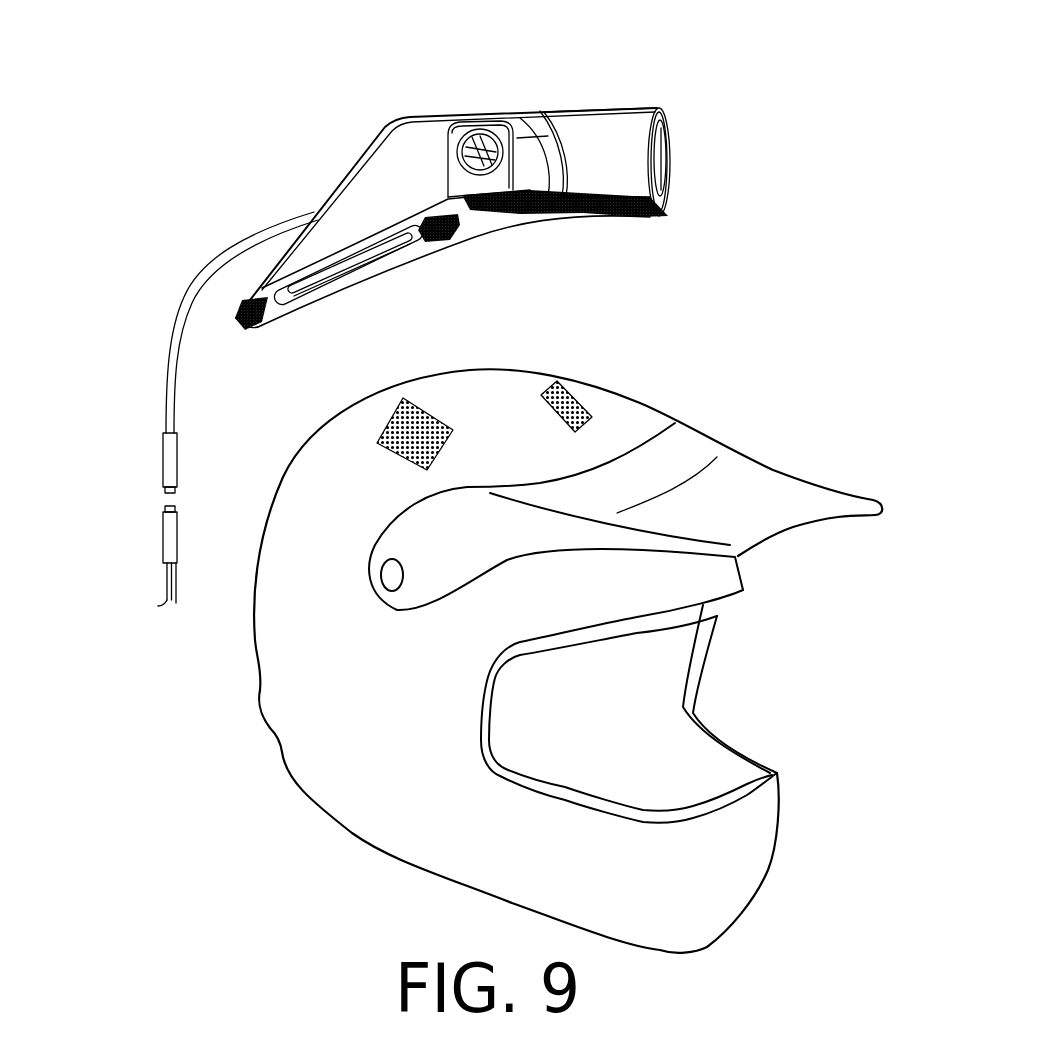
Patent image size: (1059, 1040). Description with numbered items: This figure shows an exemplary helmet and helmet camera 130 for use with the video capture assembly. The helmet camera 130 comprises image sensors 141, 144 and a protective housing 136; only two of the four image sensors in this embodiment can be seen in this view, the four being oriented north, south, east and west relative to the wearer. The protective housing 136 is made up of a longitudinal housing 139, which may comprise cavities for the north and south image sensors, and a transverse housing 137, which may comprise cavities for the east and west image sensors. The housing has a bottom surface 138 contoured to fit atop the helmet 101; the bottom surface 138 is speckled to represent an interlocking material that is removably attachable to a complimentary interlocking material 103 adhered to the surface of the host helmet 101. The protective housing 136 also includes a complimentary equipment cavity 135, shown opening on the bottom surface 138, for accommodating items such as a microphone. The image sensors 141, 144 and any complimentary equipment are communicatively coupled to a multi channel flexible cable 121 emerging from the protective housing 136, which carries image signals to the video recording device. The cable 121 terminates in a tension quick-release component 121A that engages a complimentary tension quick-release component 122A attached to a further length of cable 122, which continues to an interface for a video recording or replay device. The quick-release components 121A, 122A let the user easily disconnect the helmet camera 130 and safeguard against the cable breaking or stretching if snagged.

The helmet 101 is at (337, 457).
The complimentary interlocking material 103 is at (417, 420).
The multi channel flexible cable 121 is at (180, 315).
The tension quick-release component 121A is at (167, 447).
The cable 122 is at (168, 575).
The complimentary tension quick-release component 122A is at (167, 530).
The helmet camera 130 is at (358, 126).
The complimentary equipment cavity 135 is at (345, 262).
The protective housing 136 is at (540, 108).
The transverse housing 137 is at (540, 167).
The bottom surface 138 is at (442, 238).
The longitudinal housing 139 is at (610, 130).
The image sensor 141 is at (664, 146).
The image sensor 144 is at (490, 162).